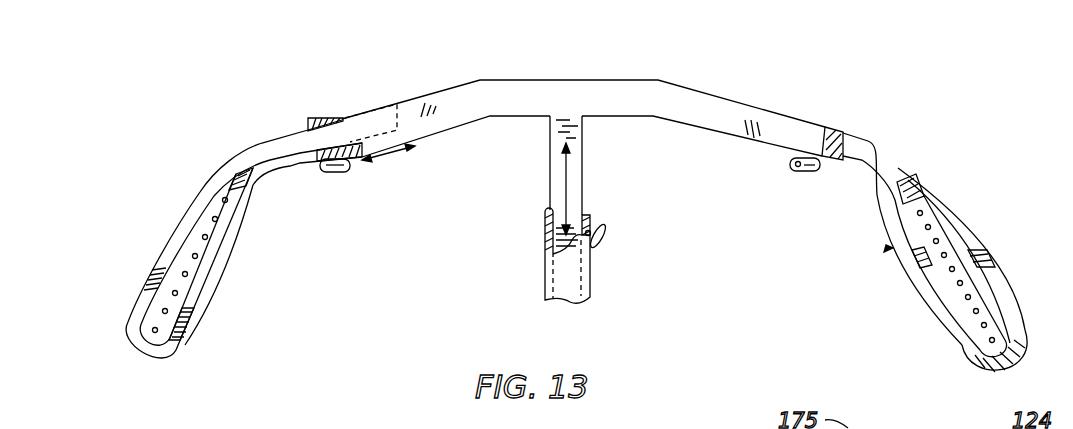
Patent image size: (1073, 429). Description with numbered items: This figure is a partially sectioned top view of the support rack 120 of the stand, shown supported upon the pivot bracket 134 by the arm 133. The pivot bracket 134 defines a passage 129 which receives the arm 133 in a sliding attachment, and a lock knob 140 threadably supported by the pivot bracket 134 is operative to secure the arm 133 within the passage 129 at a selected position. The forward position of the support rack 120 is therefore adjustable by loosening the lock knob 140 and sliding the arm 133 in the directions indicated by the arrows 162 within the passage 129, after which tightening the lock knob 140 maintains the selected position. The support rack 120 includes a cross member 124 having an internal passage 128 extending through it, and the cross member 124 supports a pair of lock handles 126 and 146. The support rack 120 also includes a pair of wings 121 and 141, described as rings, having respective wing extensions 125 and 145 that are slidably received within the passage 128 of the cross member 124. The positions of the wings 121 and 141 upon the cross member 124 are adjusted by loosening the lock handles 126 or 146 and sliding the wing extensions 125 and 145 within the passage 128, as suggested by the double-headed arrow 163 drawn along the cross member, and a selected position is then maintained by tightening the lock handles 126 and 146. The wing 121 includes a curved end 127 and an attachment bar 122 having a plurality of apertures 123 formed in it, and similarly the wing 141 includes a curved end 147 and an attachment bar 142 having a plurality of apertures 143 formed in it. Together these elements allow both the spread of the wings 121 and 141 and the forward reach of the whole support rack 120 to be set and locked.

The support rack 120 is at (616, 77).
The cross member 124 is at (735, 103).
The internal passage 128 is at (308, 126).
The wing extension 125 is at (264, 143).
The lock handle 126 is at (328, 173).
The adjustment direction arrow 163 is at (396, 160).
The apertures 123 is at (208, 234).
The wing 121 is at (226, 271).
The attachment bar 122 is at (182, 308).
The curved end 127 is at (167, 362).
The arm 133 is at (583, 216).
The arrows 162 is at (567, 184).
The passage 129 is at (550, 213).
The pivot bracket 134 is at (591, 283).
The lock knob 140 is at (605, 241).
The wing extension 145 is at (832, 136).
The lock handle 146 is at (800, 172).
The wing 141 is at (888, 249).
The apertures 143 is at (948, 268).
The attachment bar 142 is at (957, 288).
The curved end 147 is at (987, 374).